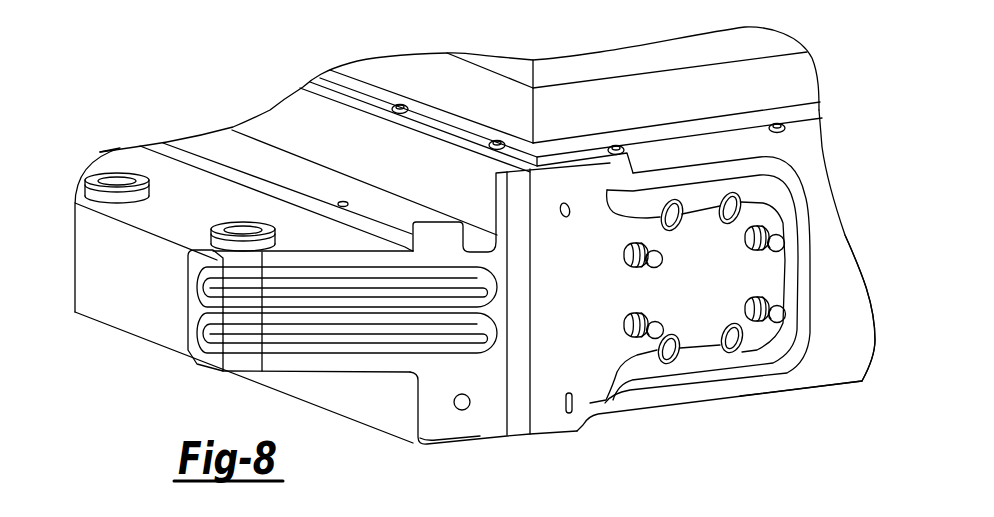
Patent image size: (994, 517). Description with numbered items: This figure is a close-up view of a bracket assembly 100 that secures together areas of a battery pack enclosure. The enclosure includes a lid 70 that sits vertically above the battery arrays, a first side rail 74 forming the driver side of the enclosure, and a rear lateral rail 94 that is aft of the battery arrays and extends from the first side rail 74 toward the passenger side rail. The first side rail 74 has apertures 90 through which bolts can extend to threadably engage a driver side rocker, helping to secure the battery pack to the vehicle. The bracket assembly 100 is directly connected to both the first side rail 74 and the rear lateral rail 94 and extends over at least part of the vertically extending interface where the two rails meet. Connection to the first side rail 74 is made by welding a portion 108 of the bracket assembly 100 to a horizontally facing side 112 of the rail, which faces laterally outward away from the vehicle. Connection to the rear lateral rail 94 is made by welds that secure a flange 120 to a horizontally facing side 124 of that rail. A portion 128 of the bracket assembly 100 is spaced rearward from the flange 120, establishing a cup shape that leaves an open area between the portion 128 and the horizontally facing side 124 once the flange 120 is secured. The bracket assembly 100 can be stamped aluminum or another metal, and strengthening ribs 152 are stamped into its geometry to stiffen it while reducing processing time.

The lid 70 is at (725, 42).
The first side rail 74 is at (193, 228).
The apertures 90 is at (230, 218).
The rear lateral rail 94 is at (838, 340).
The bracket assembly 100 is at (587, 197).
The portion of the bracket assembly 108 is at (195, 307).
The horizontally facing side 112 is at (92, 235).
The flange 120 is at (782, 200).
The horizontally facing side 124 is at (828, 263).
The portion of the bracket assembly 128 is at (687, 312).
The strengthening ribs 152 is at (337, 288).